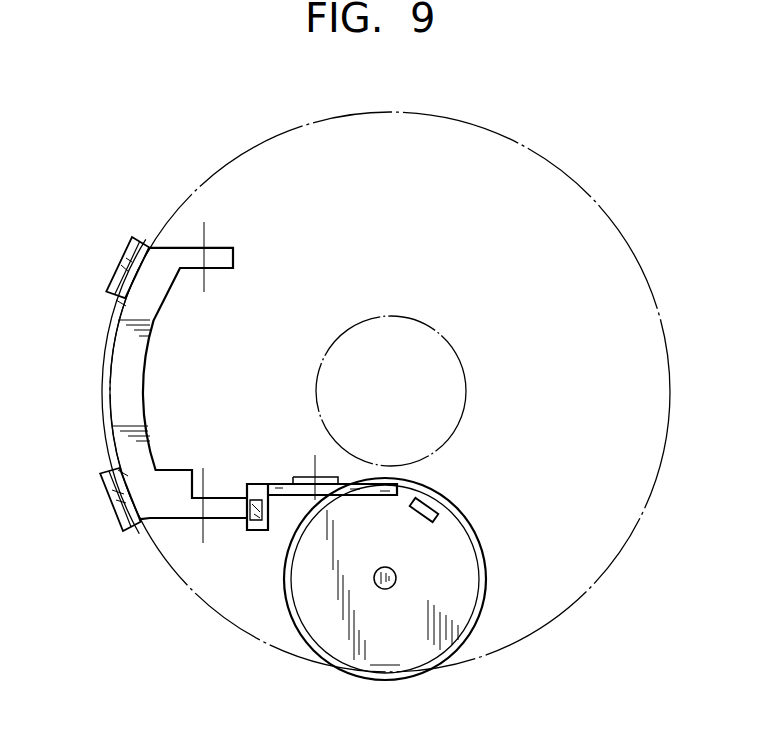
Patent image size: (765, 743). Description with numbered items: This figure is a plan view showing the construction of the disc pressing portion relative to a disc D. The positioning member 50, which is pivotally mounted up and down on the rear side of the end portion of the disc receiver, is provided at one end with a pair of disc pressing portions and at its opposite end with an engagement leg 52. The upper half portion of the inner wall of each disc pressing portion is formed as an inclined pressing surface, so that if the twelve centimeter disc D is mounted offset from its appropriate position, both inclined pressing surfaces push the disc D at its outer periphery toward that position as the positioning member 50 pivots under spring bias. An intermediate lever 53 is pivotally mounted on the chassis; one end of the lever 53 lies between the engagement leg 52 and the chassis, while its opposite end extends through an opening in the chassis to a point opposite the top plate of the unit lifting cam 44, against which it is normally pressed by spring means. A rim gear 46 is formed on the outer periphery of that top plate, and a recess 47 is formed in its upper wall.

The disc D is at (575, 607).
The positioning member 50 is at (100, 388).
The engagement leg 52 is at (232, 520).
The intermediate lever 53 is at (370, 497).
The rim gear 46 is at (488, 558).
The unit lifting cam 44 is at (474, 511).
The recess 47 is at (424, 515).